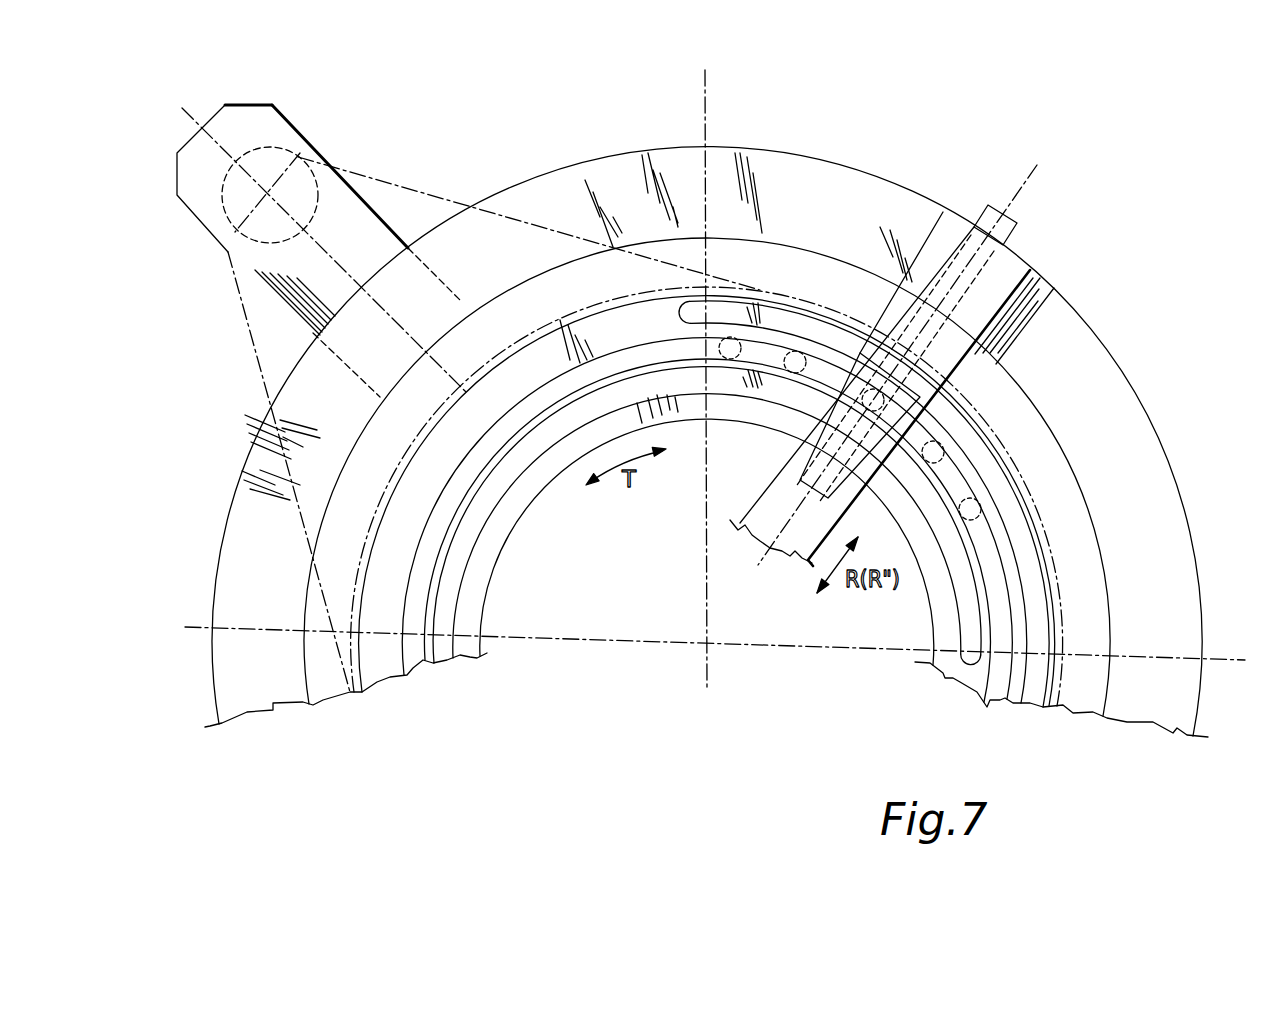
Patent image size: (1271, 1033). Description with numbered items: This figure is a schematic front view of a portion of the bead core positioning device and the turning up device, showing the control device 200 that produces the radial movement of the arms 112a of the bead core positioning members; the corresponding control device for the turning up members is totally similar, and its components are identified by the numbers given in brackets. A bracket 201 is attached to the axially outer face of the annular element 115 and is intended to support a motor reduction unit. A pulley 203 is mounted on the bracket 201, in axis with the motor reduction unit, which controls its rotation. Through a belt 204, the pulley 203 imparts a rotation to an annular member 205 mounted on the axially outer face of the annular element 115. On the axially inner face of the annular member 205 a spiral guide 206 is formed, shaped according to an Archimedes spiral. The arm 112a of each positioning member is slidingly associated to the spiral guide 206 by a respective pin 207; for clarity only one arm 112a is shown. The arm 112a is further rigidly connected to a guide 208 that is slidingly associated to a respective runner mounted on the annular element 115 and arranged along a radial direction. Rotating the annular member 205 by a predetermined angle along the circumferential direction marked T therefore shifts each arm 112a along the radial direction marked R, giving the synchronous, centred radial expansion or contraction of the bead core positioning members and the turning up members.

The annular element 115 is at (600, 180).
The control device 200 is at (1032, 203).
The bracket 201 is at (255, 123).
The pulley 203 is at (277, 167).
The belt 204 is at (417, 205).
The annular member 205 is at (787, 307).
The spiral guide 206 is at (490, 530).
The pin 207 is at (925, 416).
The guide 208 is at (998, 275).
The arm 112a is at (732, 522).